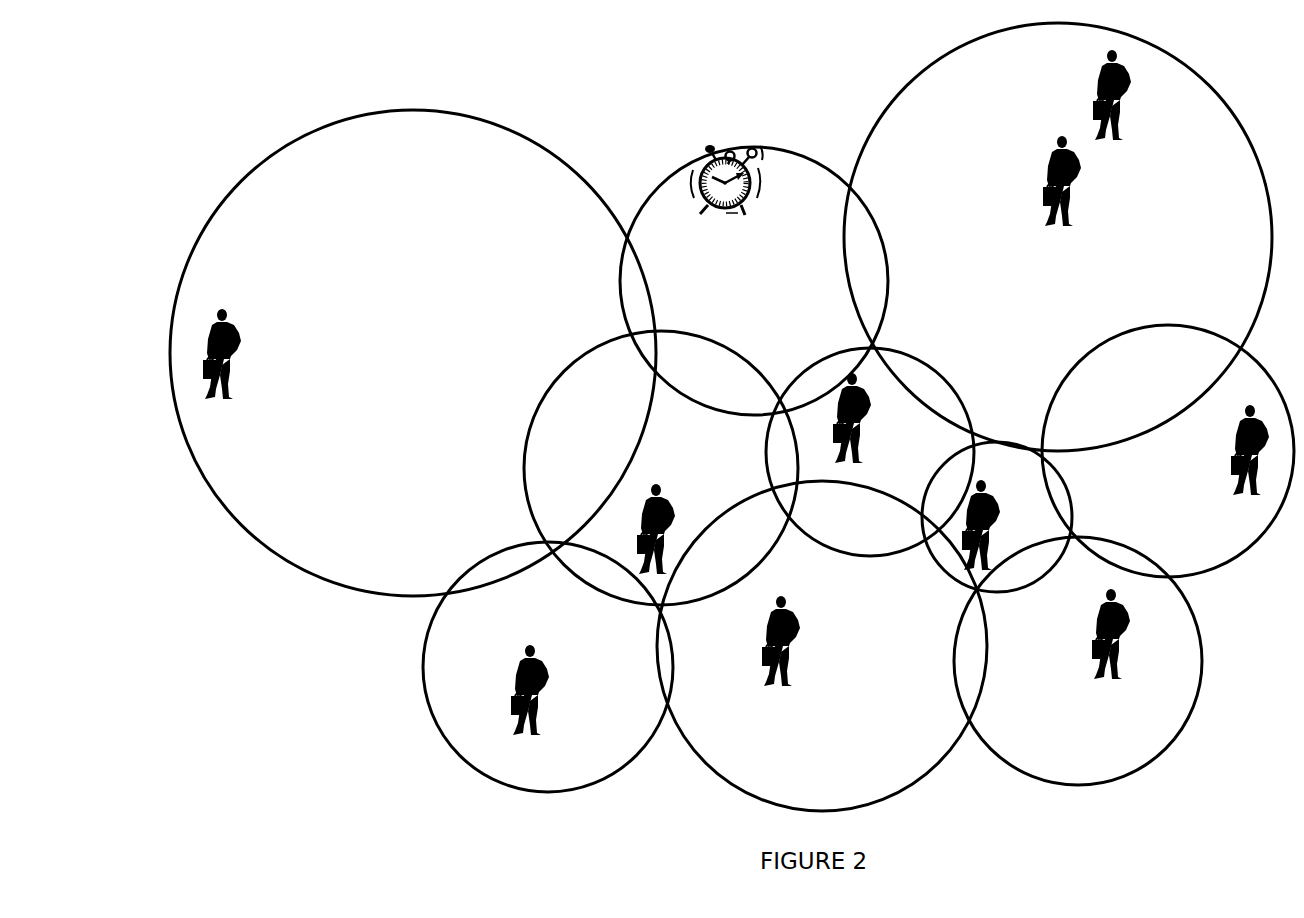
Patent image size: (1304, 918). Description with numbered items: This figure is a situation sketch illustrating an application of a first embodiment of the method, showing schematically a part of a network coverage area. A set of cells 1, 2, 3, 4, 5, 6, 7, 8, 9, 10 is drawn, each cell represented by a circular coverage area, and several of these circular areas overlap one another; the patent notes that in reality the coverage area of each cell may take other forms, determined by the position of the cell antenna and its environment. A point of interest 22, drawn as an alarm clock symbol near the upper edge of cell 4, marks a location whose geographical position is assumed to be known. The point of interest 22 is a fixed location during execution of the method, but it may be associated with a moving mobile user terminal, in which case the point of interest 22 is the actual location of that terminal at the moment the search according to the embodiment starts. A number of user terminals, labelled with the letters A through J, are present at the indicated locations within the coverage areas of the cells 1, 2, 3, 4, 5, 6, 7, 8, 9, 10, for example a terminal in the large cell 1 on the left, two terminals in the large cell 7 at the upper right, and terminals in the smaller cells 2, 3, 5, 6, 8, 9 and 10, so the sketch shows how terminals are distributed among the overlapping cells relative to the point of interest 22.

The cell 1 is at (413, 353).
The cell 2 is at (548, 667).
The cell 3 is at (661, 468).
The cell 4 is at (754, 281).
The cell 5 is at (870, 452).
The cell 6 is at (822, 646).
The cell 7 is at (1058, 237).
The cell 8 is at (997, 517).
The cell 9 is at (1078, 661).
The cell 10 is at (1168, 451).
The point of interest 22 is at (677, 158).